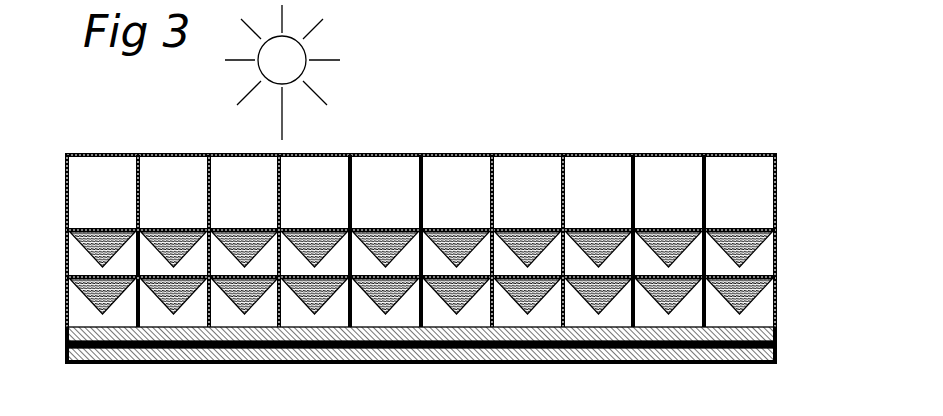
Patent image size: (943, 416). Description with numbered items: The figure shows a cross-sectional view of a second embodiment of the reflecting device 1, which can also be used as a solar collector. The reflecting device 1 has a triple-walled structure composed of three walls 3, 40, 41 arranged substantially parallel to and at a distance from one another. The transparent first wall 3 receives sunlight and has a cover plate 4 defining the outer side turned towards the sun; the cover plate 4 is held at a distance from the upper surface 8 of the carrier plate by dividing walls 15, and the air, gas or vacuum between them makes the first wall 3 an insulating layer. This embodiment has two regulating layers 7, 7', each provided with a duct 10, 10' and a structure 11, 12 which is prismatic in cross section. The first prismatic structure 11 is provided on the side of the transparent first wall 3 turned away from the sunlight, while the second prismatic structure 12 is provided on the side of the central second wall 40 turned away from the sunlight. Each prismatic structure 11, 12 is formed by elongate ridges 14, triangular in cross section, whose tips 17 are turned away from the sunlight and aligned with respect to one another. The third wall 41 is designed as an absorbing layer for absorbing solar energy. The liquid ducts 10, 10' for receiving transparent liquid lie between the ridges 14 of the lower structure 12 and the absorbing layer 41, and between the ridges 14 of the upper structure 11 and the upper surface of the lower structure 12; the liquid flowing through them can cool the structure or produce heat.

The reflecting device 1 is at (608, 150).
The transparent first wall 3 is at (62, 195).
The cover plate 4 is at (410, 156).
The regulating layer 7 is at (84, 234).
The regulating layer 7' is at (88, 296).
The upper surface of the carrier plate 8 is at (723, 226).
The duct 10 is at (84, 256).
The liquid duct 10' is at (84, 306).
The first prismatic structure 11 is at (752, 244).
The second prismatic structure 12 is at (762, 305).
The elongate ridges 14 is at (600, 302).
The dividing walls 15 is at (421, 325).
The tip 17 is at (250, 312).
The central second wall 40 is at (757, 279).
The third wall 41 is at (300, 356).